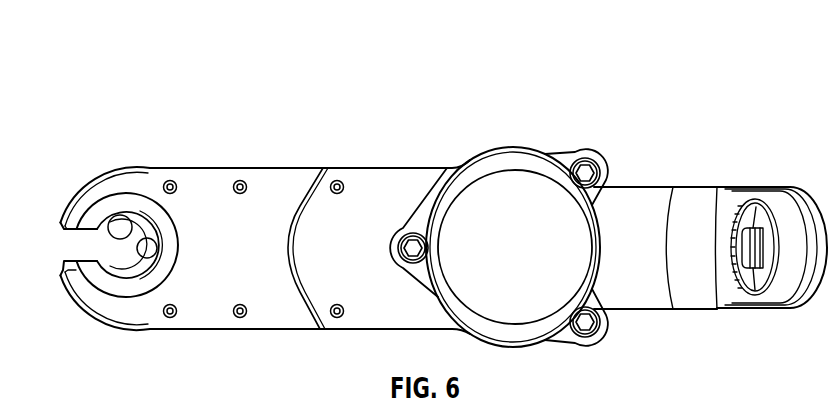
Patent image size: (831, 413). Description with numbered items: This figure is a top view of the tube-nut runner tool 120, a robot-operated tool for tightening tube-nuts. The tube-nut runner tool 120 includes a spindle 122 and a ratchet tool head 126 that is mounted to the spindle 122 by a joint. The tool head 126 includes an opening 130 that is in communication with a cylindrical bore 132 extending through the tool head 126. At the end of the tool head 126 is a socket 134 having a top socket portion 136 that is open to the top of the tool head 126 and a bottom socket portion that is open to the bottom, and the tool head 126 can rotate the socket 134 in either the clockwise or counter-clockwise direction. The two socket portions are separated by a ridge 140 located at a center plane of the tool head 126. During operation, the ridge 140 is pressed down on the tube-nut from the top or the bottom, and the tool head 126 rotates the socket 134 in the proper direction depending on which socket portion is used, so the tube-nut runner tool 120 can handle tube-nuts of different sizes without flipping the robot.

The tube-nut runner tool 120 is at (84, 55).
The spindle 122 is at (520, 300).
The ratchet tool head 126 is at (283, 167).
The opening 130 is at (70, 228).
The cylindrical bore 132 is at (70, 262).
The socket 134 is at (147, 302).
The top socket portion 136 is at (105, 220).
The ridge 140 is at (150, 243).